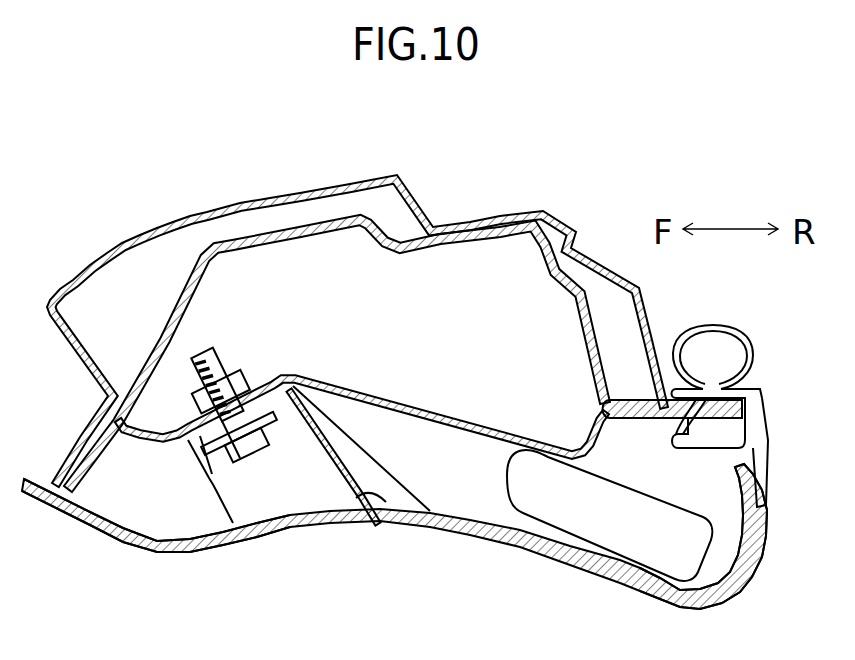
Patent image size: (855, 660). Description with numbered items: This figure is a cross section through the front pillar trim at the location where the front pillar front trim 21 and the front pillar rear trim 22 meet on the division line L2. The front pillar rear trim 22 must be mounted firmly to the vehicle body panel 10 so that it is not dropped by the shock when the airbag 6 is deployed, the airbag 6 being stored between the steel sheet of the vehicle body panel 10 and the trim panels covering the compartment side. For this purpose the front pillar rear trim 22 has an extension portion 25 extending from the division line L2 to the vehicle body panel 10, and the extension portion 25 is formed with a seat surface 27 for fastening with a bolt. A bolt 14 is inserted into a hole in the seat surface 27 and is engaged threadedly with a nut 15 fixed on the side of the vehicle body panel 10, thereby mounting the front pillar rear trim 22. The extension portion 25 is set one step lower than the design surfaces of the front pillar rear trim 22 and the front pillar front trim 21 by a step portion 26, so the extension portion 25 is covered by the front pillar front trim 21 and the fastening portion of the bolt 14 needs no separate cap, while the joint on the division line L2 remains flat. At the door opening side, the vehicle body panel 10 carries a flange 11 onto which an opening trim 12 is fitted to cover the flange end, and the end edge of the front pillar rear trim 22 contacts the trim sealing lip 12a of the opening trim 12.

The airbag 6 is at (753, 577).
The vehicle body panel 10 is at (463, 430).
The flange 11 is at (740, 425).
The opening trim 12 is at (766, 400).
The trim sealing lip 12a is at (770, 487).
The bolt 14 is at (250, 463).
The nut 15 is at (259, 380).
The front pillar front trim 21 is at (193, 553).
The front pillar rear trim 22 is at (557, 560).
The extension portion 25 is at (293, 488).
The step portion 26 is at (364, 491).
The seat surface 27 is at (208, 480).
The division line L2 is at (372, 539).